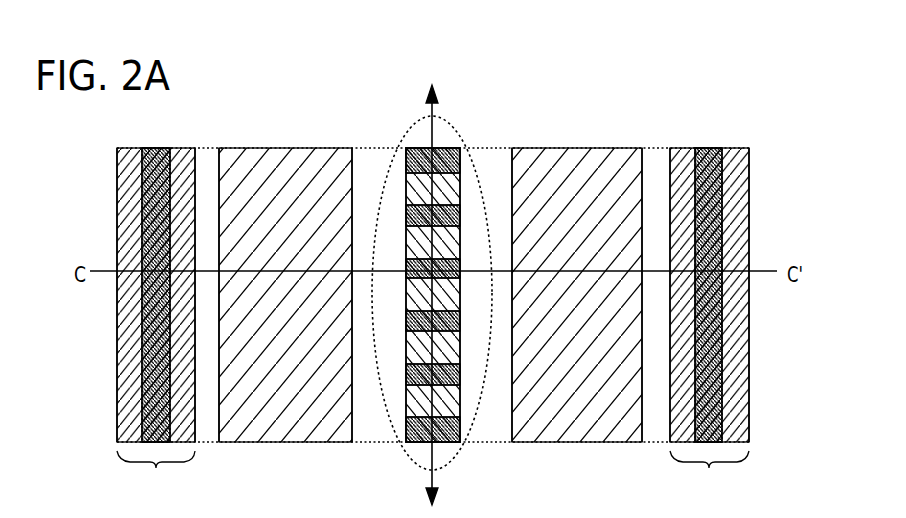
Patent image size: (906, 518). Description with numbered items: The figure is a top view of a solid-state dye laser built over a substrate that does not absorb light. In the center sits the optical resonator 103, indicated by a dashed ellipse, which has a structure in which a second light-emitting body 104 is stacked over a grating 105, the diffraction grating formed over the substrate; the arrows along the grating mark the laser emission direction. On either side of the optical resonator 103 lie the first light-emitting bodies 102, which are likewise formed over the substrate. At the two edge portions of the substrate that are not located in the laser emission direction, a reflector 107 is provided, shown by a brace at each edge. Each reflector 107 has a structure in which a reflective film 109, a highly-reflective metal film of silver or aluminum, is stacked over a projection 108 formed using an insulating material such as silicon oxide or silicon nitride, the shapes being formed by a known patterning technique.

The first light-emitting bodies 102 is at (282, 165).
The optical resonator 103 is at (413, 455).
The second light-emitting body 104 is at (413, 197).
The grating 105 is at (442, 150).
The reflector 107 is at (433, 475).
The projection 108 is at (158, 168).
The reflective film 109 is at (132, 218).